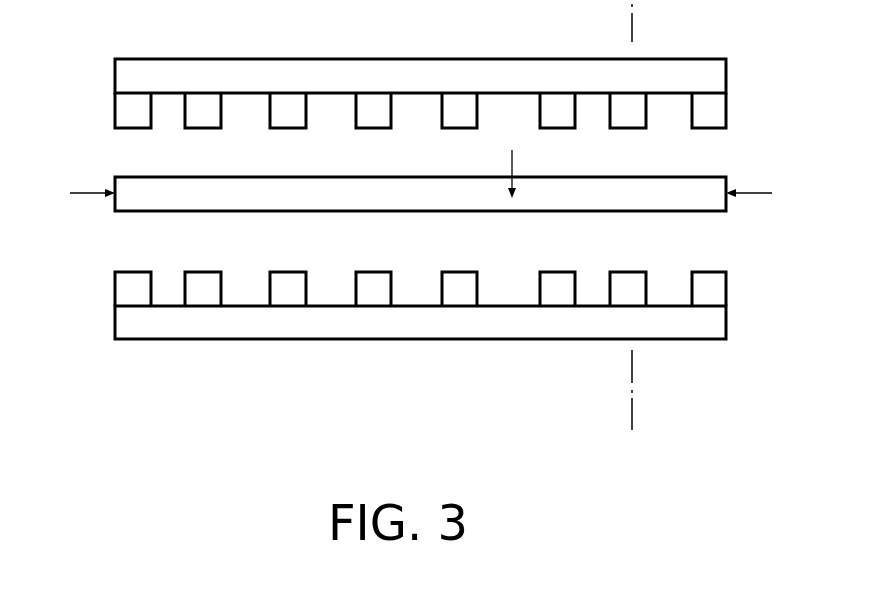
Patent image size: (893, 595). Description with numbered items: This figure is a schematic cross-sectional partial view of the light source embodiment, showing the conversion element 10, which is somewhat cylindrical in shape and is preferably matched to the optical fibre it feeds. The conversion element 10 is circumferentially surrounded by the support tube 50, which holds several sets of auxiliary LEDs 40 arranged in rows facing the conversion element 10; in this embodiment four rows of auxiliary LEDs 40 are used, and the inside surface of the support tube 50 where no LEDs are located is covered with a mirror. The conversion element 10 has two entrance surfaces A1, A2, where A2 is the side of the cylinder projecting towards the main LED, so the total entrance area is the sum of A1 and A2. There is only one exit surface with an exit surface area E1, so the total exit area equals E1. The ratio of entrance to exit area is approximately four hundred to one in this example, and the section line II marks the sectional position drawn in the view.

The conversion element 10 is at (360, 211).
The auxiliary LEDs 40 is at (115, 109).
The support tube 50 is at (115, 75).
The entrance surface A1 is at (516, 160).
The entrance surface A2 is at (77, 193).
The exit surface area E1 is at (764, 194).
The section line II is at (632, 233).